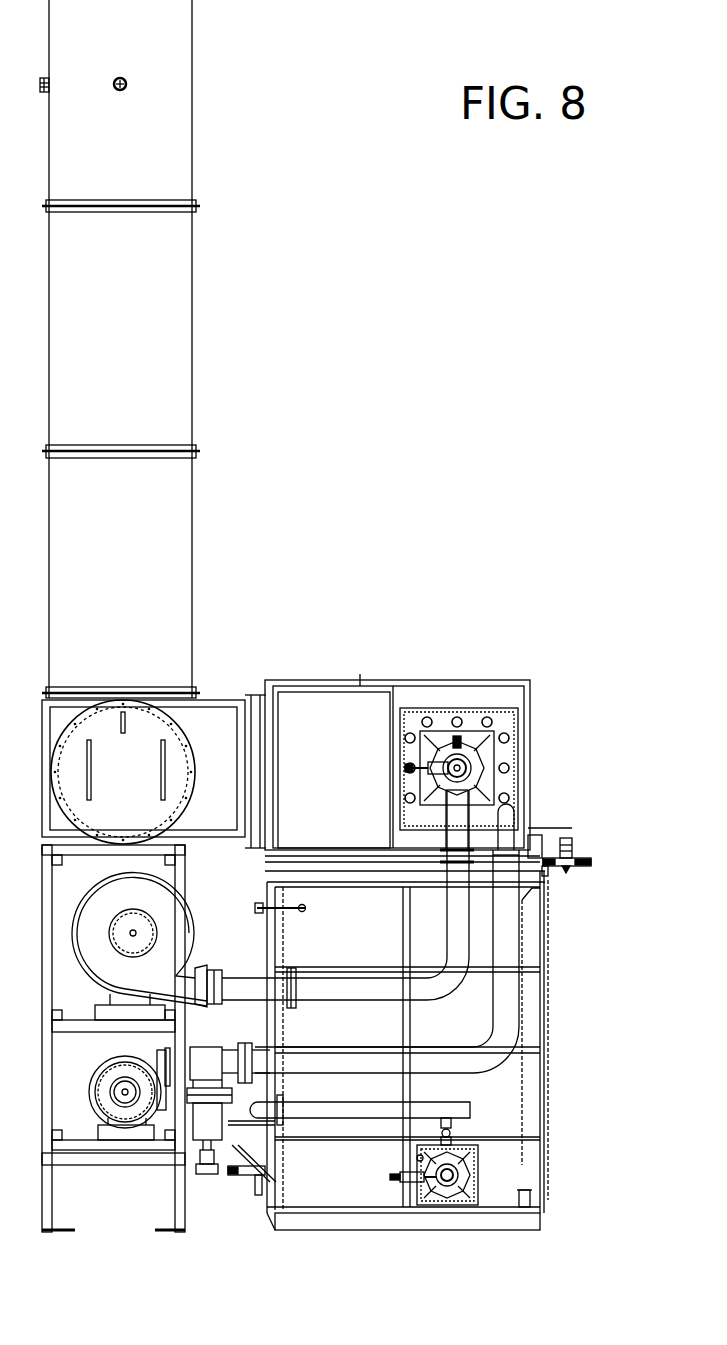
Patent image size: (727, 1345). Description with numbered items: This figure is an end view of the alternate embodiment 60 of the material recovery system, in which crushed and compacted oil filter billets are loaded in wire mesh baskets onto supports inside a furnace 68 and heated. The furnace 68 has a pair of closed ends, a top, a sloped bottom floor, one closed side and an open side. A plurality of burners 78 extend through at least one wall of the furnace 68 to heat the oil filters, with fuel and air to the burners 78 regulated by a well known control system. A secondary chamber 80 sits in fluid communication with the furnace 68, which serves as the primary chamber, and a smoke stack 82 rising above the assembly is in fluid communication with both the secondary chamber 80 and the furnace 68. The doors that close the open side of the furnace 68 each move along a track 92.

The alternate embodiment 60 is at (473, 565).
The smoke stack 82 is at (138, 330).
The secondary chamber 80 is at (327, 680).
The track 92 is at (572, 845).
The furnace 68 is at (500, 1098).
The burners 78 is at (252, 1178).